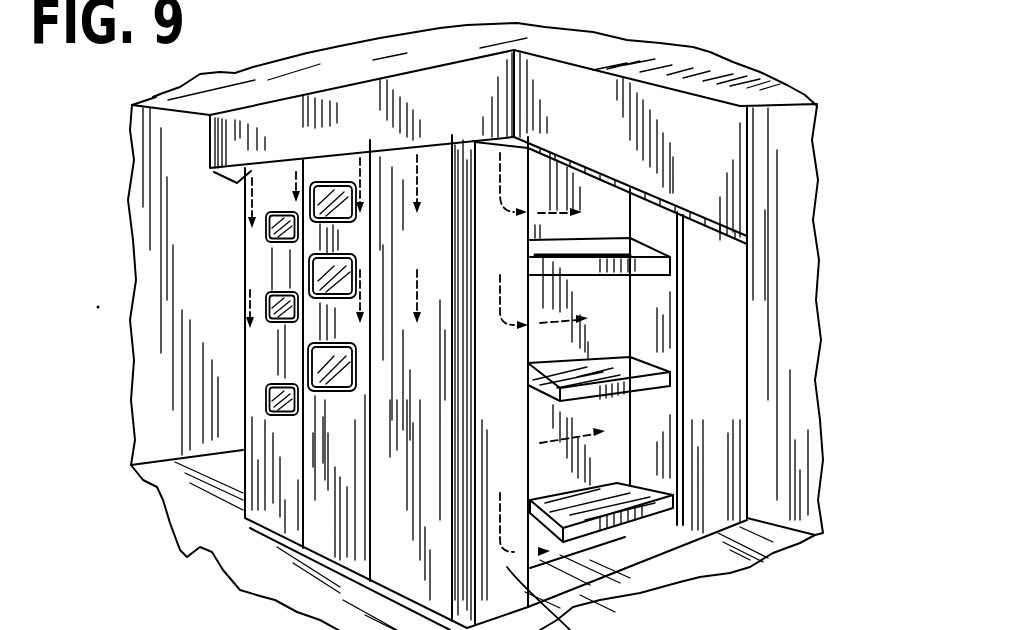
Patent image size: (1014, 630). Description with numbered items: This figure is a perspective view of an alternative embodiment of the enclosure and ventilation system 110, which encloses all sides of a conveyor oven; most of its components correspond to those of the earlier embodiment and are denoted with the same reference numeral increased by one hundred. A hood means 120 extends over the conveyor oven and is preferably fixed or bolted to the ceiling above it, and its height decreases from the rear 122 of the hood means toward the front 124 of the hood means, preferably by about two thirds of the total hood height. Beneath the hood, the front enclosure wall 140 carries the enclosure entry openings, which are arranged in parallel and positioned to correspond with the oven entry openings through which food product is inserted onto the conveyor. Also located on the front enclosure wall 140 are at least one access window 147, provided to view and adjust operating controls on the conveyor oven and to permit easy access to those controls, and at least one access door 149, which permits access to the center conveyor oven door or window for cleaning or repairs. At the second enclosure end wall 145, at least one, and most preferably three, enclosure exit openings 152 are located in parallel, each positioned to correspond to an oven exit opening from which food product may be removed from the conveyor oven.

The enclosure and ventilation system 110 is at (187, 213).
The hood means 120 is at (647, 65).
The rear of the hood means 122 is at (750, 165).
The front of the hood means 124 is at (453, 110).
The front enclosure wall 140 is at (315, 520).
The second enclosure end wall 145 is at (627, 528).
The access window 147 is at (266, 395).
The access door 149 is at (355, 363).
The enclosure exit opening 152 is at (620, 482).